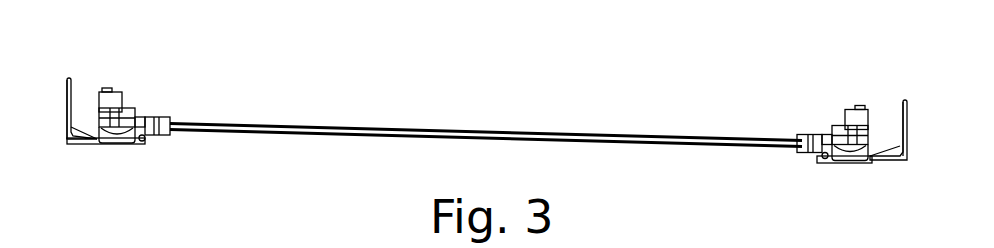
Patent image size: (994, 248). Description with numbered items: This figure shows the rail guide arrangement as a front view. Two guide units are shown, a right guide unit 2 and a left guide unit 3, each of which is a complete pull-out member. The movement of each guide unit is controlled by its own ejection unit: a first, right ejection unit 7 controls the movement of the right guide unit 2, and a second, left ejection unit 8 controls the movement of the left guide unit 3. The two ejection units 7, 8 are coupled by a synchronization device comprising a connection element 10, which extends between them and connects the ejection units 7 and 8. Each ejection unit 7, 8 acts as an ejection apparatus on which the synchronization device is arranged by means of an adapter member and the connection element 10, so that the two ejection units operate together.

The right guide unit 2 is at (129, 86).
The right ejection unit 7 is at (141, 160).
The connection element 10 is at (485, 128).
The left ejection unit 8 is at (806, 171).
The left guide unit 3 is at (869, 171).